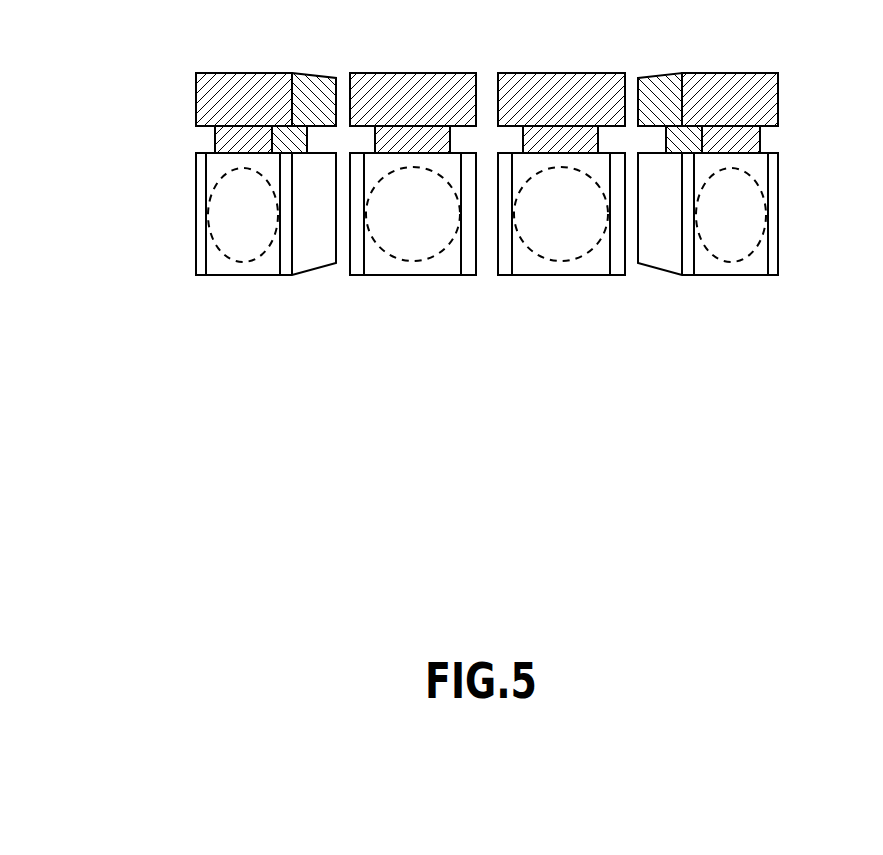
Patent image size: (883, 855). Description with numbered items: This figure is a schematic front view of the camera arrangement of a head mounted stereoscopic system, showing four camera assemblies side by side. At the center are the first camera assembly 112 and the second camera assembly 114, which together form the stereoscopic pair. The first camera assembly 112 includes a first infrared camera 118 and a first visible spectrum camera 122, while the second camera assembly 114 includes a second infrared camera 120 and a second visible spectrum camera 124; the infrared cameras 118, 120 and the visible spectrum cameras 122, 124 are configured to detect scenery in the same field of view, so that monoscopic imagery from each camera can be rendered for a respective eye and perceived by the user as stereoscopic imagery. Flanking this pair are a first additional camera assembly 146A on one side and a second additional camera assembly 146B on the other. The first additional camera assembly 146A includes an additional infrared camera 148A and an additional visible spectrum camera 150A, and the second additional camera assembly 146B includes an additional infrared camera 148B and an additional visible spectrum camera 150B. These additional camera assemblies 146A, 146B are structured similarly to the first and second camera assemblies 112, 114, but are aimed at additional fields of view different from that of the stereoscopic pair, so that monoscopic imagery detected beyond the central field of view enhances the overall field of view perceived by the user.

The first camera assembly 112 is at (588, 188).
The second camera assembly 114 is at (384, 188).
The first infrared camera 118 is at (563, 73).
The second infrared camera 120 is at (415, 73).
The first visible spectrum camera 122 is at (616, 275).
The second visible spectrum camera 124 is at (358, 275).
The first additional camera assembly 146A is at (754, 171).
The second additional camera assembly 146B is at (219, 171).
The additional infrared camera 148A is at (692, 73).
The additional infrared camera 148B is at (292, 73).
The additional visible spectrum camera 150A is at (778, 187).
The additional visible spectrum camera 150B is at (196, 187).